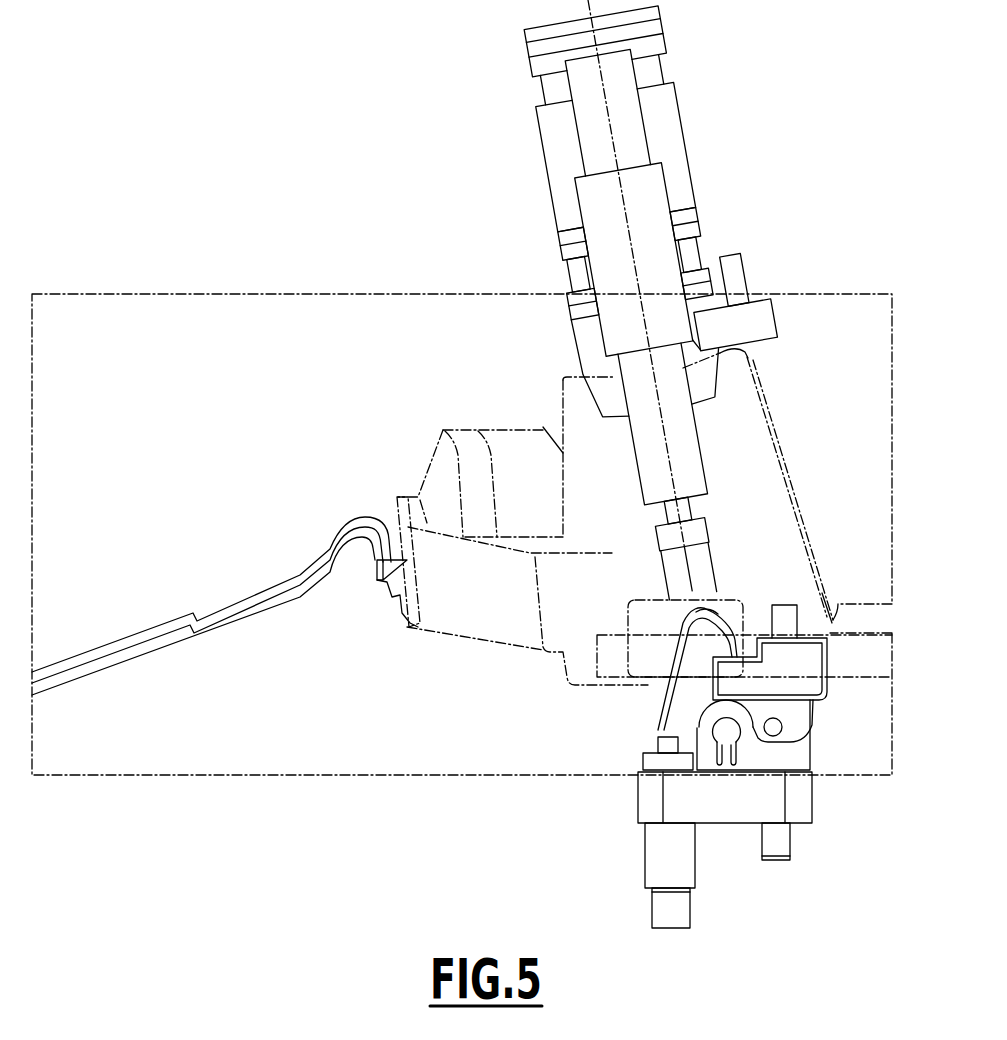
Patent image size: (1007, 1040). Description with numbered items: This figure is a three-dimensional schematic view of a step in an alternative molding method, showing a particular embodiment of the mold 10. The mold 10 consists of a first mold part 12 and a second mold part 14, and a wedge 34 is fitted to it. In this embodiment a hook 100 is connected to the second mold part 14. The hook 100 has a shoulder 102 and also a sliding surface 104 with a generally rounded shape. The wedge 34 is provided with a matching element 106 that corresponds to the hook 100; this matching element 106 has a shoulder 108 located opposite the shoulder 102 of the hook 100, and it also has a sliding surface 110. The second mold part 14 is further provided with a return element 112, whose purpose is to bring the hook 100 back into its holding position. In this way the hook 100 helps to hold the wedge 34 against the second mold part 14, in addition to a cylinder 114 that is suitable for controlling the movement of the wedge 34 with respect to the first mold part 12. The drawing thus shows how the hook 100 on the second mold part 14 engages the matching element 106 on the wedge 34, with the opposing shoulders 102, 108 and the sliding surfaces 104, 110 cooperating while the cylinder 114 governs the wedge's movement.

The mold 10 is at (830, 270).
The first mold part 12 is at (834, 343).
The second mold part 14 is at (747, 730).
The wedge 34 is at (508, 445).
The hook 100 is at (633, 717).
The shoulder 102 is at (625, 680).
The sliding surface 104 is at (728, 612).
The matching element 106 is at (822, 688).
The shoulder 108 is at (750, 640).
The sliding surface 110 is at (801, 738).
The return element 112 is at (650, 740).
The cylinder 114 is at (662, 120).